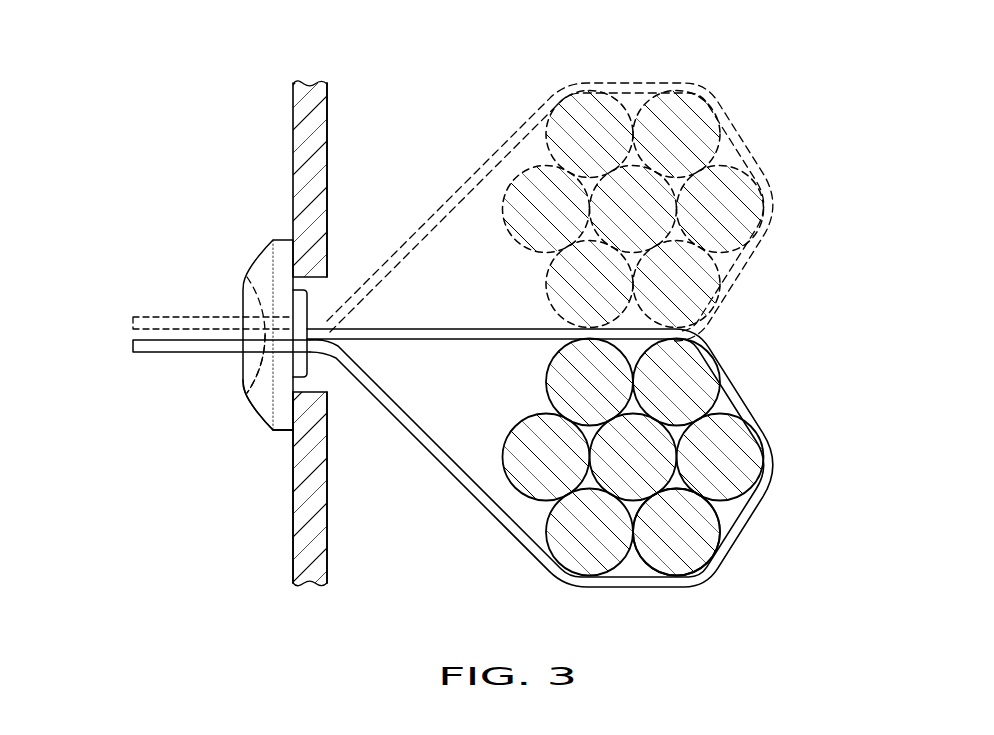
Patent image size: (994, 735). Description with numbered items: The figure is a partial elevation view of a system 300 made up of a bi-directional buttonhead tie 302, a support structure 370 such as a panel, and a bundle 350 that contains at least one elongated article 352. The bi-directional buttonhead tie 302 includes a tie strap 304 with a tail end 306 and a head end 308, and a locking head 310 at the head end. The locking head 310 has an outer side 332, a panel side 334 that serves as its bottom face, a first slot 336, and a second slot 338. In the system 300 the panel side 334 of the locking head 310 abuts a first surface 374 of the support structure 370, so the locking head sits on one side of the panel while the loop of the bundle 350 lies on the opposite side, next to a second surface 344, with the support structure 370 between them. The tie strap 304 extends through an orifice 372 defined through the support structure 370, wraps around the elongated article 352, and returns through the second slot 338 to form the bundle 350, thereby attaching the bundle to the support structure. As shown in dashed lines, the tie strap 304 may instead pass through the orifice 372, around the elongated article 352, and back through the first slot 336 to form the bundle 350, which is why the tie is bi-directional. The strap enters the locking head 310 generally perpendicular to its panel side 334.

The system 300 is at (179, 94).
The bi-directional buttonhead tie 302 is at (227, 222).
The tie strap 304 is at (447, 337).
The tail end 306 is at (133, 344).
The head end 308 is at (243, 375).
The locking head 310 is at (278, 431).
The outer side 332 is at (243, 290).
The panel side 334 is at (325, 224).
The first slot 336 is at (247, 277).
The second slot 338 is at (247, 393).
The second surface 344 is at (327, 532).
The bundle 350 is at (806, 409).
The elongated article 352 is at (703, 550).
The support structure 370 is at (307, 90).
The orifice 372 is at (327, 290).
The first surface 374 is at (293, 538).